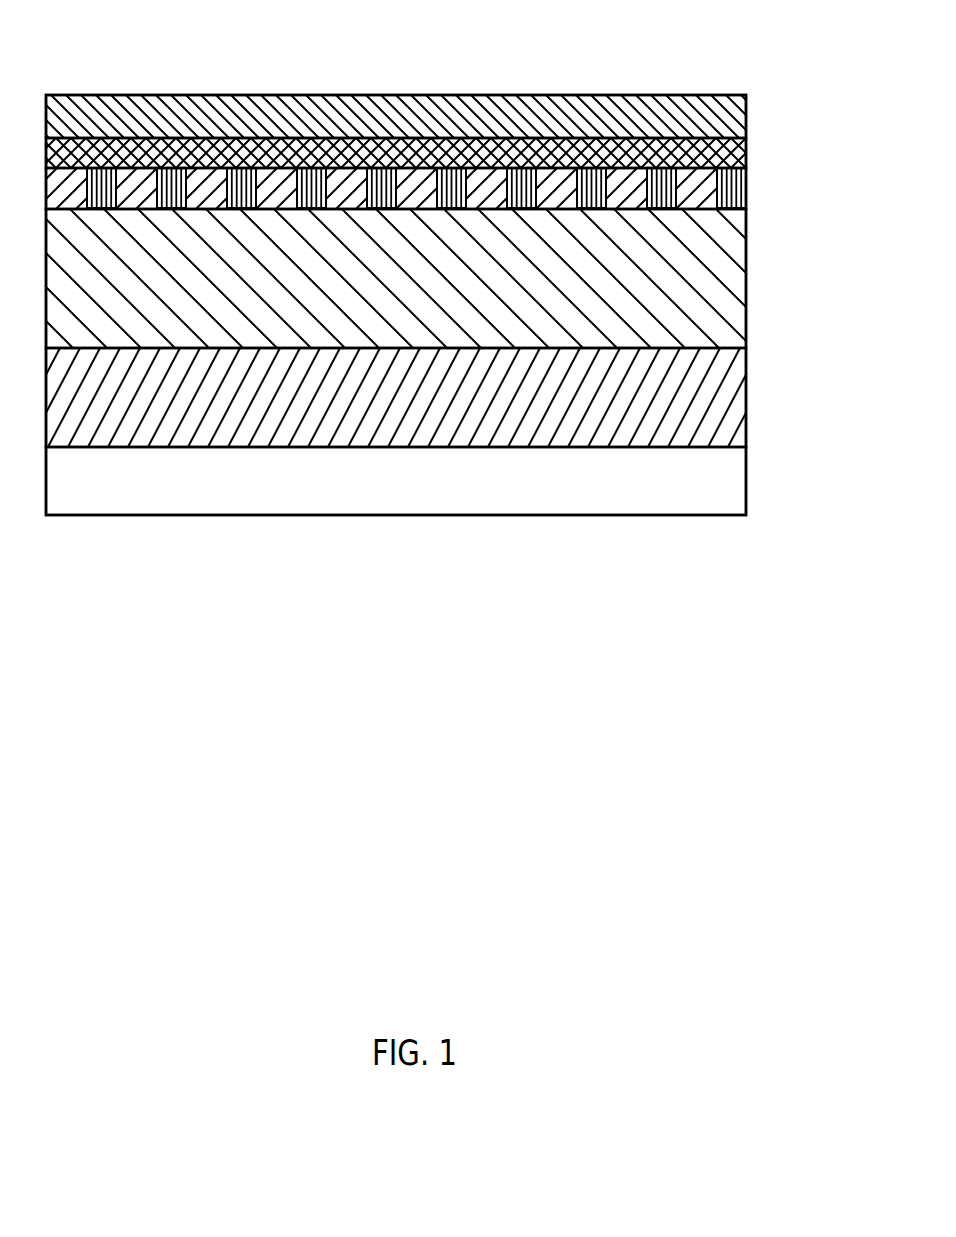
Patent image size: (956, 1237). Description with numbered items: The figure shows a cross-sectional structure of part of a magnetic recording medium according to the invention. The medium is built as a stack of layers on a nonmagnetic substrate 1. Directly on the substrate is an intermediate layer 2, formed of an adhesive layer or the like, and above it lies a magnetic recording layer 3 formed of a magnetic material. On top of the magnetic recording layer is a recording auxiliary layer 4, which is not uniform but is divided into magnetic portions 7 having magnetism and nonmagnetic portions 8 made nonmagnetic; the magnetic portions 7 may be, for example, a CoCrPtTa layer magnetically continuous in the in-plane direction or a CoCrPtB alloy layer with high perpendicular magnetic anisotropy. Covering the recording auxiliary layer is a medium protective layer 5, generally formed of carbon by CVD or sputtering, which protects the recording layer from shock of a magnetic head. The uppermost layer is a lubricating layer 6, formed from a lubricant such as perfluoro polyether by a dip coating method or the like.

The nonmagnetic substrate 1 is at (737, 480).
The intermediate layer 2 is at (737, 393).
The magnetic recording layer 3 is at (737, 283).
The recording auxiliary layer 4 is at (737, 188).
The medium protective layer 5 is at (747, 148).
The lubricating layer 6 is at (738, 112).
The magnetic portions 7 is at (137, 183).
The nonmagnetic portions 8 is at (170, 177).